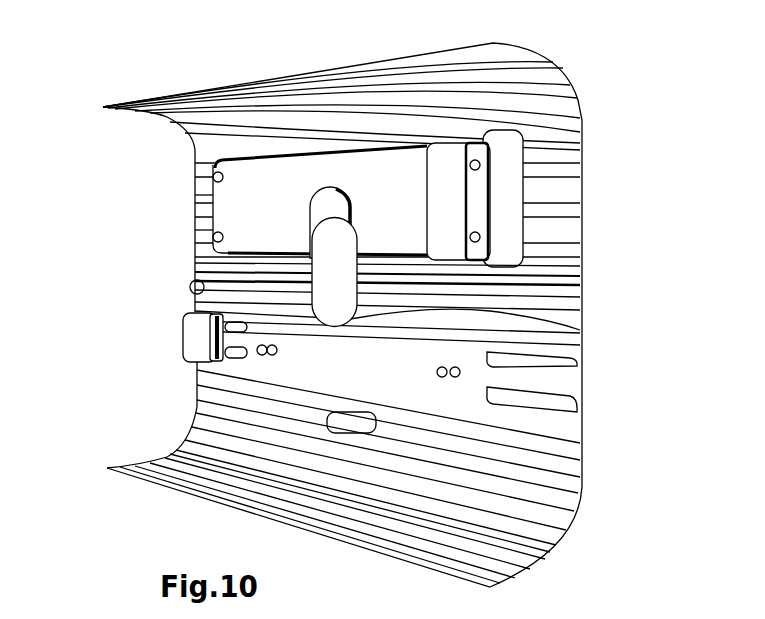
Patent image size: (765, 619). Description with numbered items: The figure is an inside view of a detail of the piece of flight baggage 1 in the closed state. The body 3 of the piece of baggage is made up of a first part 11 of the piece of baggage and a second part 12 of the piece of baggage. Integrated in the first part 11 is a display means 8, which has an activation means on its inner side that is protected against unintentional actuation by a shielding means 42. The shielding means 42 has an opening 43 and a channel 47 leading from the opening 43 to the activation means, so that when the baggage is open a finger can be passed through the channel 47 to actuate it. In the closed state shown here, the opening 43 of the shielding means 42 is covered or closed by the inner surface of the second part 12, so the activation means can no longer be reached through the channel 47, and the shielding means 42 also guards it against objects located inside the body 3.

The piece of flight baggage 1 is at (118, 70).
The body of the piece of baggage 3 is at (583, 67).
The display means 8 is at (383, 193).
The first part of the piece of baggage 11 is at (557, 235).
The second part of the piece of baggage 12 is at (555, 423).
The shielding means 42 is at (577, 282).
The opening 43 is at (580, 330).
The channel 47 is at (293, 275).